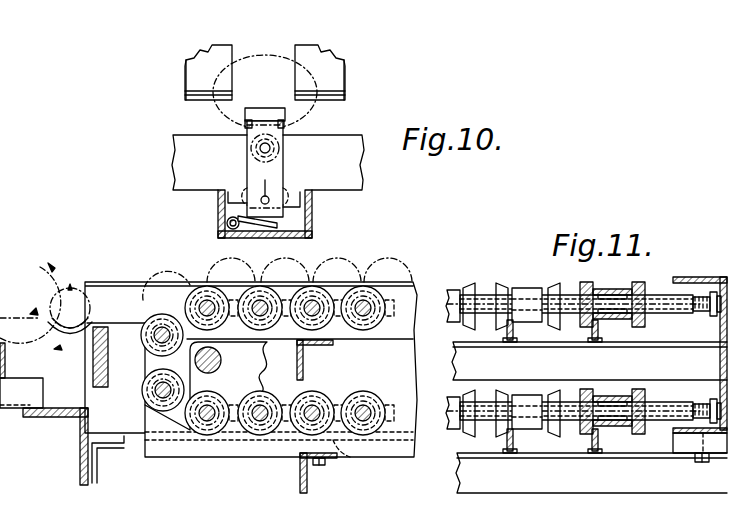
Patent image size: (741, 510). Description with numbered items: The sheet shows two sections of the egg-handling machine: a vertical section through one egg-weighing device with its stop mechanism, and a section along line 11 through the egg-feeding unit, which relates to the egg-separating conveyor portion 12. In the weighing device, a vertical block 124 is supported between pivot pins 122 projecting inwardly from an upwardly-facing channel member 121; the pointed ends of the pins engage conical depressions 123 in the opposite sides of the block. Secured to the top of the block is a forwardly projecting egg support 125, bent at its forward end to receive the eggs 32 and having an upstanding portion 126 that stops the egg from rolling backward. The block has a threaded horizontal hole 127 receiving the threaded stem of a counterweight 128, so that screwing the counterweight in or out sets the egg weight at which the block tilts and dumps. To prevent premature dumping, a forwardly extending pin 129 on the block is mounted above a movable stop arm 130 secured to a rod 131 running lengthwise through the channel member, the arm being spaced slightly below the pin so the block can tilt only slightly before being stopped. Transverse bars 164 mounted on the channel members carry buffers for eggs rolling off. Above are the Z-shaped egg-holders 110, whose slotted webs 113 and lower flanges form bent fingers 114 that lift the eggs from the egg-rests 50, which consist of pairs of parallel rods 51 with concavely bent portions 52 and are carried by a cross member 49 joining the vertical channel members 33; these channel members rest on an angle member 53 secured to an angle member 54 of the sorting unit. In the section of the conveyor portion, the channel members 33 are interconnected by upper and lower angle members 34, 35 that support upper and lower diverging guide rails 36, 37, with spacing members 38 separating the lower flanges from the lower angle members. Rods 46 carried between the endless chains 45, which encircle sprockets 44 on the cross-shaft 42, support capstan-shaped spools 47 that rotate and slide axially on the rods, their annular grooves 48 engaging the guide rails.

In FIG. 10, the egg-holder 110 is at (185, 79).
In FIG. 10, the web 113 is at (256, 72).
In FIG. 10, the bent finger 114 is at (205, 96).
In FIG. 10, the egg 32 is at (72, 288).
In FIG. 10, the upstanding portion 126 is at (268, 107).
In FIG. 10, the egg support 125 is at (245, 125).
In FIG. 10, the vertical block 124 is at (280, 152).
In FIG. 10, the counterweight 128 is at (252, 146).
In FIG. 10, the threaded horizontal hole 127 is at (256, 158).
In FIG. 10, the conical depression 123 is at (248, 182).
In FIG. 10, the forwardly extending pin 129 is at (267, 183).
In FIG. 10, the transverse bar 164 is at (348, 163).
In FIG. 10, the pivot pin 122 is at (228, 198).
In FIG. 10, the channel member 121 is at (312, 212).
In FIG. 10, the rod 131 is at (227, 225).
In FIG. 10, the movable stop arm 130 is at (256, 230).
In FIG. 10, the section line 11 is at (341, 361).
In FIG. 10, the egg-separating conveyor portion 12 is at (405, 248).
In FIG. 10, the vertical channel member 33 is at (130, 282).
In FIG. 11, the vertical channel member 33 is at (720, 327).
In FIG. 10, the concavely bent portion 52 is at (69, 340).
In FIG. 10, the egg-rest 50 is at (102, 322).
In FIG. 10, the parallel rod 51 is at (132, 328).
In FIG. 10, the cross member 49 is at (100, 388).
In FIG. 10, the angle member 54 is at (80, 463).
In FIG. 10, the angle member 53 is at (112, 448).
In FIG. 10, the sprocket 44 is at (256, 366).
In FIG. 10, the cross-shaft 42 is at (221, 362).
In FIG. 10, the rod 46 is at (214, 312).
In FIG. 11, the rod 46 is at (657, 294).
In FIG. 10, the endless chain 45 is at (339, 328).
In FIG. 11, the endless chain 45 is at (700, 310).
In FIG. 10, the upper angle member 34 is at (304, 366).
In FIG. 11, the upper angle member 34 is at (589, 361).
In FIG. 10, the lower angle member 35 is at (299, 482).
In FIG. 11, the lower angle member 35 is at (556, 485).
In FIG. 10, the spacing member 38 is at (350, 458).
In FIG. 11, the spacing member 38 is at (680, 443).
In FIG. 11, the annular groove 48 is at (505, 283).
In FIG. 11, the capstan-shaped spool 47 is at (527, 288).
In FIG. 11, the upper diverging guide rail 36 is at (514, 331).
In FIG. 11, the lower diverging guide rail 37 is at (514, 442).